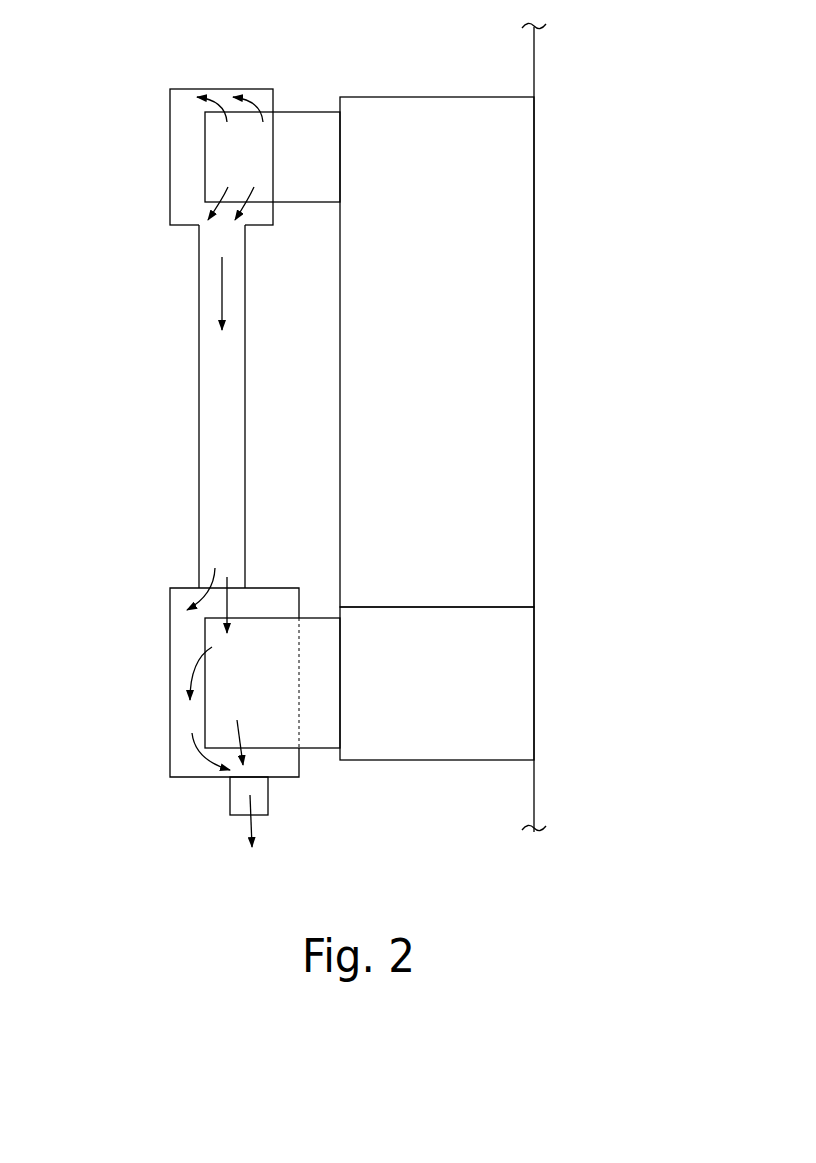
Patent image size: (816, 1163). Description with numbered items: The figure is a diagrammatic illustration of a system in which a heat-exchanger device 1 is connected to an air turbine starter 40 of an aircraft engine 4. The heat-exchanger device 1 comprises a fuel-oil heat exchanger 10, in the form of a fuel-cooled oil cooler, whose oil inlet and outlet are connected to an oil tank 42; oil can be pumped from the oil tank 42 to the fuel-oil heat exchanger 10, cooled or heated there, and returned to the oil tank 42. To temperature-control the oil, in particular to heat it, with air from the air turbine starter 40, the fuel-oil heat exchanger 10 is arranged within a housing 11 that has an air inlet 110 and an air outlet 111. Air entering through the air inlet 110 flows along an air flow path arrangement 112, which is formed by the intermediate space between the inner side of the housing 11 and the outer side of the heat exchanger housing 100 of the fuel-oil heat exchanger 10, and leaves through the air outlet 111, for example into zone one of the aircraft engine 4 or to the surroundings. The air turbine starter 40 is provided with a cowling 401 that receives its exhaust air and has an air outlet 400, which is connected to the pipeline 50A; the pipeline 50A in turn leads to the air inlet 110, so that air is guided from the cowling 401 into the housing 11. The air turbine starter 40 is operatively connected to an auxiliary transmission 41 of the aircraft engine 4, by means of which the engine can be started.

The heat-exchanger device 1 is at (215, 689).
The aircraft engine 4 is at (486, 419).
The fuel-oil heat exchanger 10 is at (237, 700).
The housing 11 is at (168, 623).
The air turbine starter 40 is at (199, 152).
The auxiliary transmission 41 is at (502, 326).
The oil tank 42 is at (502, 692).
The pipeline 50A is at (217, 393).
The heat exchanger housing 100 is at (272, 752).
The air inlet 110 is at (199, 588).
The air outlet 111 is at (258, 802).
The air flow path arrangement 112 is at (180, 665).
The air outlet 400 is at (197, 226).
The cowling 401 is at (178, 153).